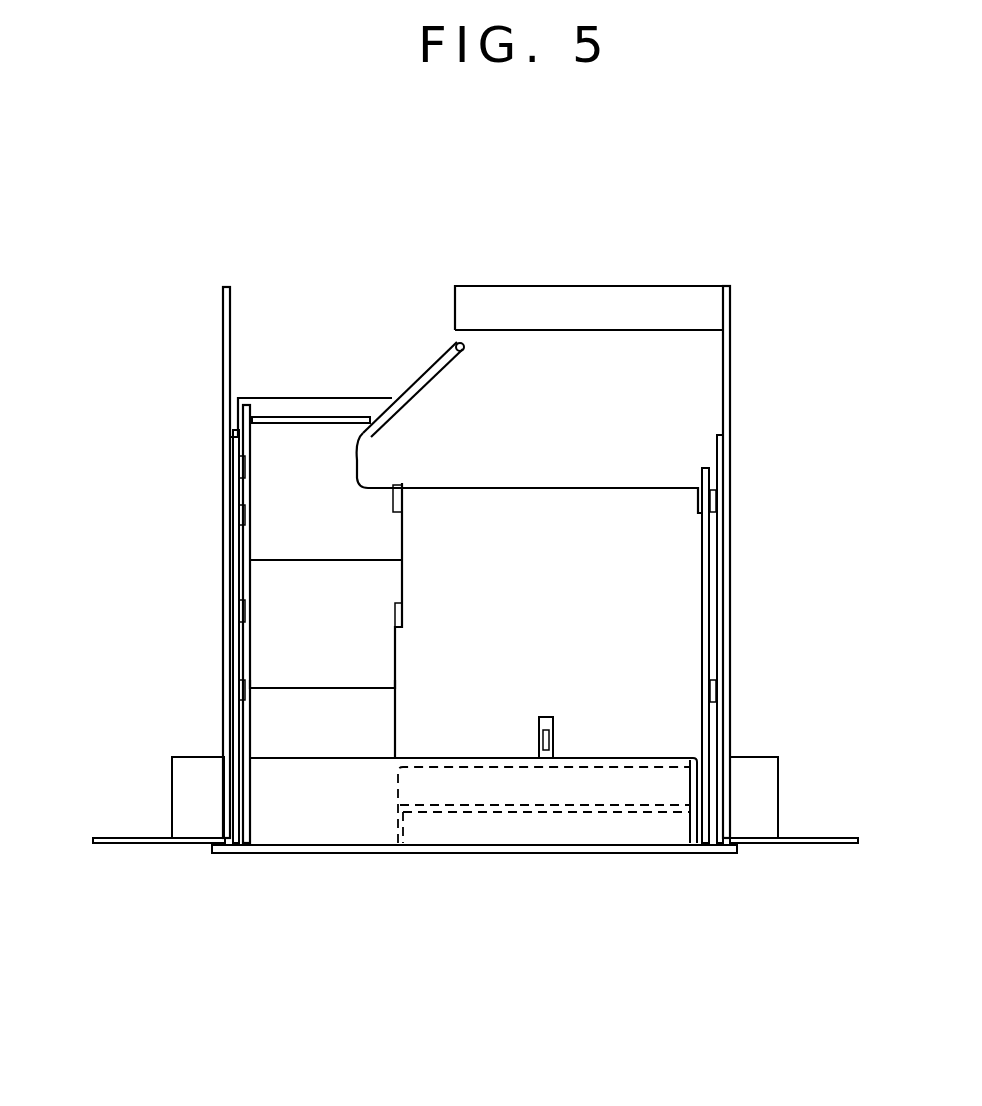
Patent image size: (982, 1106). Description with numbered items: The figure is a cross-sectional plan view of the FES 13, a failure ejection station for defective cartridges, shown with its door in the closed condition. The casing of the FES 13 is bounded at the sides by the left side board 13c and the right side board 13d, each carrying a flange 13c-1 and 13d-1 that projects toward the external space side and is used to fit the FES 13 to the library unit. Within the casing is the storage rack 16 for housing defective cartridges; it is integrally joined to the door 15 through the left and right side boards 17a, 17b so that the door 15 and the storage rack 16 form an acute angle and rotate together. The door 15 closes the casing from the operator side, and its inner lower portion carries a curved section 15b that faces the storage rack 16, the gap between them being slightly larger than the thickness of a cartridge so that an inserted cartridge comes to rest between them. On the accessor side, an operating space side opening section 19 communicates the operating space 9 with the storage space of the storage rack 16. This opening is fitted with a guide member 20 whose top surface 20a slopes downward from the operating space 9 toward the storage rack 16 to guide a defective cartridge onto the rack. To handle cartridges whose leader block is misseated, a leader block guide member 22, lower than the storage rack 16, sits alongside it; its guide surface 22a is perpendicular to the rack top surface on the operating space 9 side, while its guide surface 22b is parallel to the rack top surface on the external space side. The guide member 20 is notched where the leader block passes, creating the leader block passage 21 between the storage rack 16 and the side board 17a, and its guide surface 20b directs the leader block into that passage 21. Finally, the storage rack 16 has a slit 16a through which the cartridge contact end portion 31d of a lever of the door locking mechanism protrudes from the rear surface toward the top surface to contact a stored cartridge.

The operating space 9 is at (590, 227).
The FES 13 is at (476, 616).
The left side board 13c is at (225, 598).
The right side board 13d is at (713, 504).
The flange 13c-1 is at (120, 847).
The flange 13d-1 is at (822, 847).
The door 15 is at (512, 856).
The curved section 15b is at (660, 768).
The storage rack 16 is at (665, 595).
The slit 16a is at (546, 715).
The left side board 17a is at (235, 672).
The right side board 17b is at (706, 640).
The operating space side opening section 19 is at (404, 305).
The guide member 20 is at (597, 361).
The top surface 20a is at (688, 398).
The guide surface 20b is at (433, 350).
The leader block passage 21 is at (327, 368).
The leader block guide member 22 is at (249, 620).
The guide surface 22a is at (272, 472).
The guide surface 22b is at (272, 646).
The cartridge contact end portion 31d is at (553, 737).